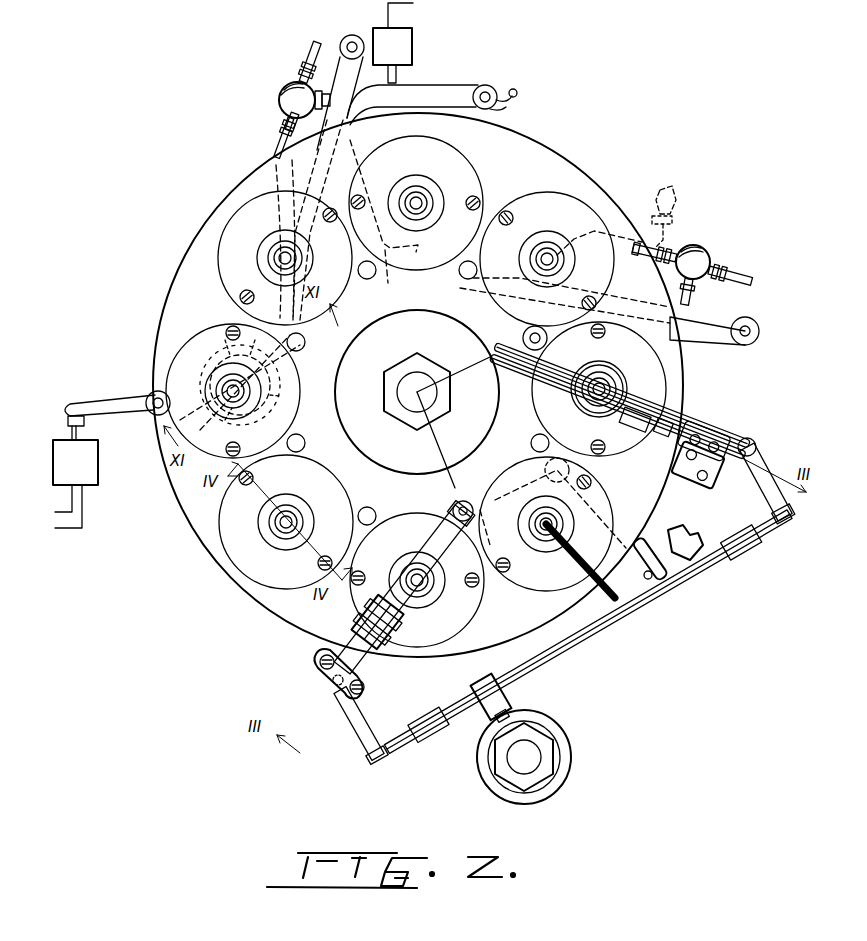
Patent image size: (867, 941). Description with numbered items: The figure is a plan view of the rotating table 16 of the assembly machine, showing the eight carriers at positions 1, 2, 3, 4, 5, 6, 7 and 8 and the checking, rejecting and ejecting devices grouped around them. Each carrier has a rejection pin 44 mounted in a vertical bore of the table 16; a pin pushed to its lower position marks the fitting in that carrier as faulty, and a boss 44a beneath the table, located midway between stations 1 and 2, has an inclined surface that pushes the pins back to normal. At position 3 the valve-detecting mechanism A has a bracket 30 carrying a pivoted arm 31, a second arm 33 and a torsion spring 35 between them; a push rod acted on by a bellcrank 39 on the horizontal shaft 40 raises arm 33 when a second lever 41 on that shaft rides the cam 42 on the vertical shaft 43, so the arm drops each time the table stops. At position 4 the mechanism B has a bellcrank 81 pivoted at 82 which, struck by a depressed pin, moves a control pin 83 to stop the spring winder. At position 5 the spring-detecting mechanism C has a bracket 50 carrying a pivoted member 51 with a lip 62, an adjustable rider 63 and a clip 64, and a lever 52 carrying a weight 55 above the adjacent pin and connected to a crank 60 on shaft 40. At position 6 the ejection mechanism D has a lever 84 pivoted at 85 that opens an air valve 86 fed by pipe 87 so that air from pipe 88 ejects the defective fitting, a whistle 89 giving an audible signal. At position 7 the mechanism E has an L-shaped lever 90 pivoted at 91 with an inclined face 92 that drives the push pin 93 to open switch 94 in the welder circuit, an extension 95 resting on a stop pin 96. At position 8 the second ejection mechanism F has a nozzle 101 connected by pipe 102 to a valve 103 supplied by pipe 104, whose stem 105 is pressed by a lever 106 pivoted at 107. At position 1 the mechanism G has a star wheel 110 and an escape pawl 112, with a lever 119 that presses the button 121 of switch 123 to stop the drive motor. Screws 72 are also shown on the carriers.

The carrier position 1 is at (233, 391).
The carrier position 2 is at (286, 522).
The carrier position 3 is at (417, 580).
The carrier position 4 is at (547, 527).
The carrier position 5 is at (599, 389).
The carrier position 6 is at (565, 259).
The carrier position 7 is at (415, 203).
The carrier position 8 is at (285, 258).
The rotating table 16 is at (561, 168).
The bracket 30 is at (369, 687).
The pivoted arm 31 is at (393, 601).
The second arm 33 is at (330, 678).
The torsion spring 35 is at (356, 628).
The lever or bellcrank 39 is at (371, 728).
The horizontal shaft 40 is at (648, 604).
The second bellcrank or lever 41 is at (502, 700).
The cam 42 is at (485, 780).
The vertical shaft 43 is at (520, 772).
The rejection pin 44 is at (367, 280).
The boss 44a is at (318, 433).
The bracket 50 is at (690, 480).
The member 51 is at (520, 362).
The lever 52 is at (598, 369).
The weight 55 is at (523, 337).
The crank 60 is at (772, 480).
The upwardly curved projecting lip 62 is at (590, 402).
The sliding weight or rider 63 is at (636, 397).
The horizontally projecting clip 64 is at (664, 440).
The screws 72 is at (470, 200).
The bellcrank 81 is at (506, 516).
The pivot 82 is at (556, 474).
The control pin 83 is at (700, 566).
The lever 84 is at (702, 340).
The pivot 85 is at (754, 338).
The air valve 86 is at (702, 284).
The pipe 87 is at (748, 282).
The pipe 88 is at (621, 238).
The air operated whistle 89 is at (665, 185).
The lever 90 is at (446, 86).
The pivot 91 is at (491, 90).
The inclined face 92 is at (390, 268).
The push pin 93 is at (398, 78).
The push button switch 94 is at (412, 36).
The extension 95 is at (507, 108).
The stop pin 96 is at (516, 93).
The air nozzle 101 is at (280, 253).
The pipe 102 is at (275, 150).
The valve 103 is at (280, 95).
The pipe 104 is at (300, 54).
The valve stem 105 is at (317, 92).
The lever 106 is at (342, 64).
The pivot 107 is at (353, 42).
The star wheel 110 is at (283, 389).
The escape pawl 112 is at (242, 404).
The lever 119 is at (118, 398).
The button 121 is at (86, 421).
The push button switch 123 is at (99, 469).
The valve-detecting mechanism A is at (315, 662).
The mechanism B is at (627, 581).
The spring-detecting mechanism C is at (702, 432).
The ejection mechanism D is at (700, 249).
The mechanism E is at (479, 84).
The second ejection mechanism F is at (277, 105).
The mechanism G is at (222, 353).